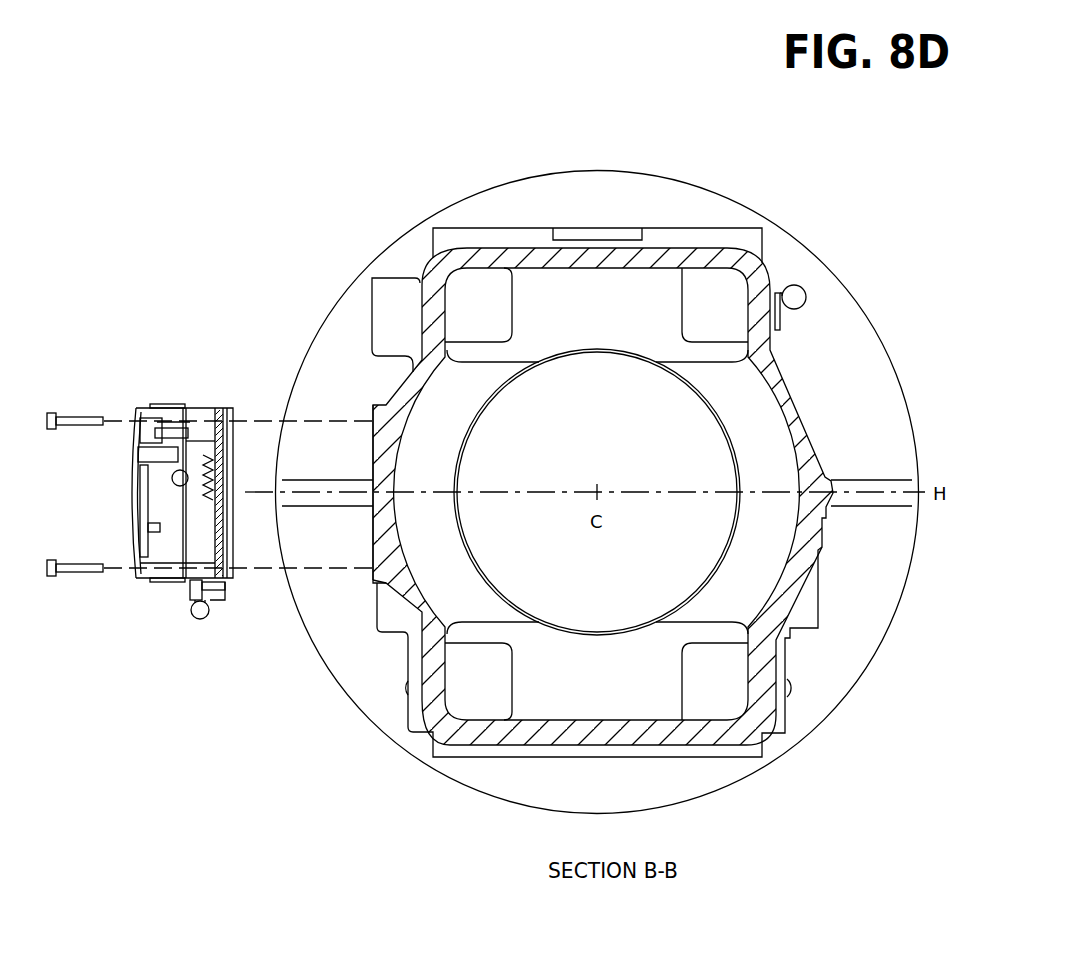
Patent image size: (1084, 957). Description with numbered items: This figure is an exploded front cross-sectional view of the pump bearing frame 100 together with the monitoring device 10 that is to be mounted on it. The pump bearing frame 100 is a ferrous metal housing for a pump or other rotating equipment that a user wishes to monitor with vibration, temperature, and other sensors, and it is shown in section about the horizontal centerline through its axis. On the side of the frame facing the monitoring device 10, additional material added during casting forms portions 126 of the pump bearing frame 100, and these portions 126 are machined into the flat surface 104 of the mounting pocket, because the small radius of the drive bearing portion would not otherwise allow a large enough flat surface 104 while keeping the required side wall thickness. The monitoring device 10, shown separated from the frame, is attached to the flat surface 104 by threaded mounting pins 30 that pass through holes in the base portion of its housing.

The pump bearing frame 100 is at (423, 200).
The portions of pump bearing frame 126 is at (378, 403).
The flat machined surface 104 is at (370, 537).
The monitoring device 10 is at (178, 397).
The threaded mounting pins 30 is at (58, 578).